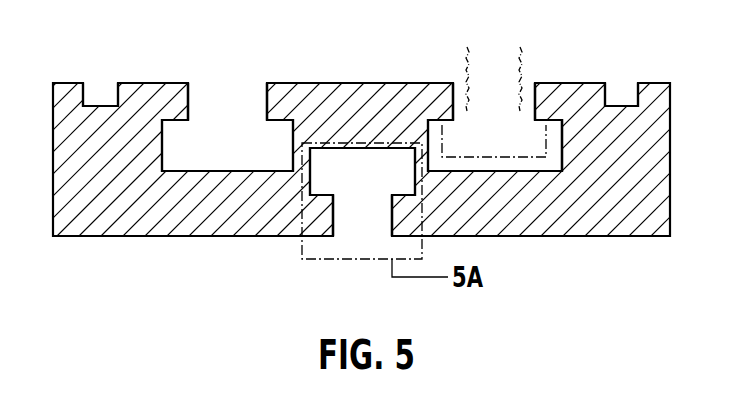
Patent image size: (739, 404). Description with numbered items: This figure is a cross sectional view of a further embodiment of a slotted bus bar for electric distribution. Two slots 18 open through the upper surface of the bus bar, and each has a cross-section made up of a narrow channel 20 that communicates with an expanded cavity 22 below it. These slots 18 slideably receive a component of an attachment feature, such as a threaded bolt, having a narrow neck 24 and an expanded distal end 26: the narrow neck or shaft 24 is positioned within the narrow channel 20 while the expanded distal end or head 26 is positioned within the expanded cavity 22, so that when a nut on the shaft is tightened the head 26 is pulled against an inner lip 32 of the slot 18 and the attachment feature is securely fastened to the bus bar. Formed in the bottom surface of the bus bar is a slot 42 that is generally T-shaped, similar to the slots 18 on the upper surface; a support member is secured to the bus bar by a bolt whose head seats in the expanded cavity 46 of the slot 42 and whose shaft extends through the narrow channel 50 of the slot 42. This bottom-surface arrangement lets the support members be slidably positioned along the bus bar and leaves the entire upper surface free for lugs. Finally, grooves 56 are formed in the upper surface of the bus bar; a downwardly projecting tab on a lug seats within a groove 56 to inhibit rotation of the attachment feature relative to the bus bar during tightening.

The slot 18 is at (227, 81).
The narrow channel 20 is at (203, 103).
The expanded cavity 22 is at (518, 165).
The narrow neck 24 is at (520, 47).
The expanded distal end 26 is at (543, 132).
The inner lip 32 is at (173, 122).
The slot 42 is at (362, 240).
The expanded cavity 46 is at (391, 173).
The narrow channel 50 is at (371, 222).
The groove 56 is at (102, 84).